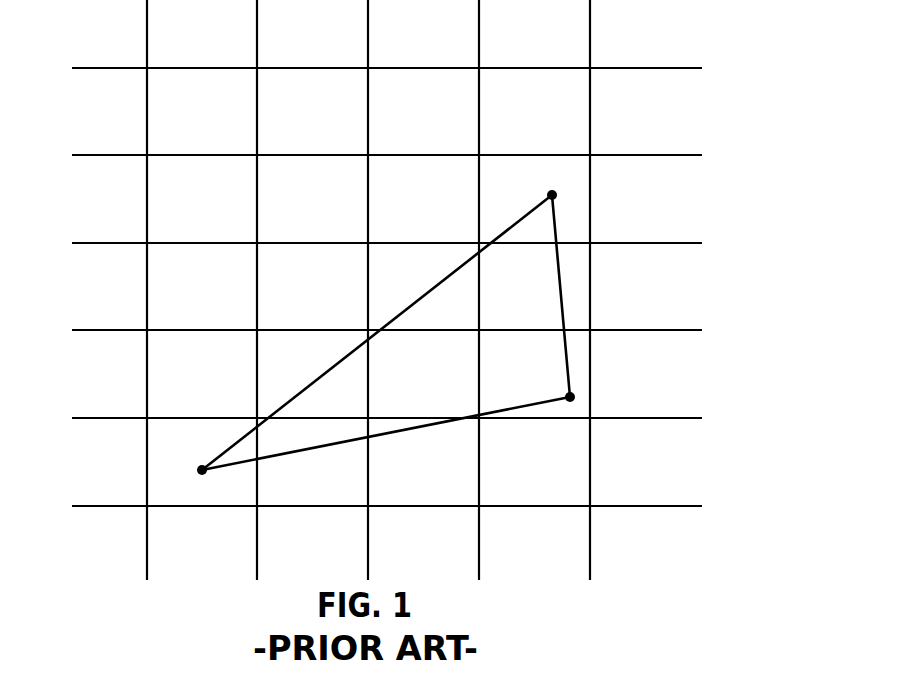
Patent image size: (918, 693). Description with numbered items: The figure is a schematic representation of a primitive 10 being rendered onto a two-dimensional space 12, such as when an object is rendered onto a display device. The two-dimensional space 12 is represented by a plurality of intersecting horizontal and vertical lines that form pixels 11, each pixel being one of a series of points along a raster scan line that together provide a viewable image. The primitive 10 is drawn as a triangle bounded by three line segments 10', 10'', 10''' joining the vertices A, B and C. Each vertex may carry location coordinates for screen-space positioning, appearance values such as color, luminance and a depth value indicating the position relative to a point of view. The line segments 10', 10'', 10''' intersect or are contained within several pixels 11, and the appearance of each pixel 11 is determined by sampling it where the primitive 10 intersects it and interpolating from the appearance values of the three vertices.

The primitive 10 is at (496, 328).
The line segment 10' is at (377, 332).
The line segment 10'' is at (386, 433).
The line segment 10''' is at (611, 296).
The pixel 11 is at (313, 329).
The two-dimensional space 12 is at (120, 46).